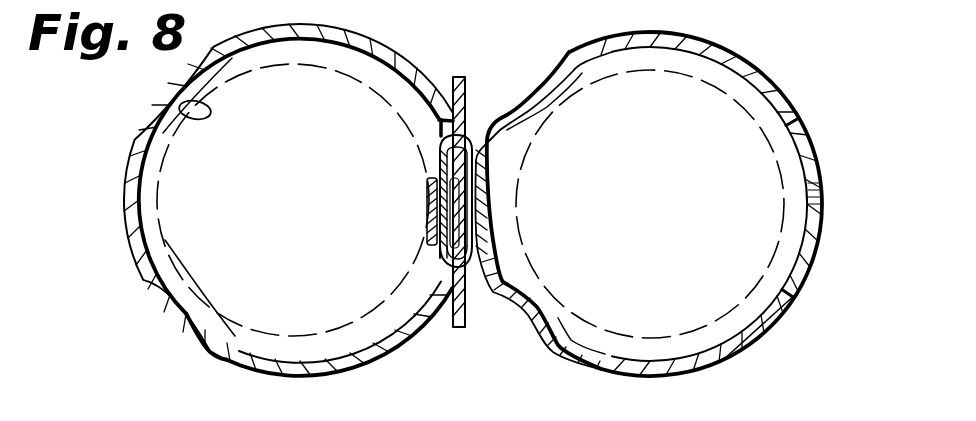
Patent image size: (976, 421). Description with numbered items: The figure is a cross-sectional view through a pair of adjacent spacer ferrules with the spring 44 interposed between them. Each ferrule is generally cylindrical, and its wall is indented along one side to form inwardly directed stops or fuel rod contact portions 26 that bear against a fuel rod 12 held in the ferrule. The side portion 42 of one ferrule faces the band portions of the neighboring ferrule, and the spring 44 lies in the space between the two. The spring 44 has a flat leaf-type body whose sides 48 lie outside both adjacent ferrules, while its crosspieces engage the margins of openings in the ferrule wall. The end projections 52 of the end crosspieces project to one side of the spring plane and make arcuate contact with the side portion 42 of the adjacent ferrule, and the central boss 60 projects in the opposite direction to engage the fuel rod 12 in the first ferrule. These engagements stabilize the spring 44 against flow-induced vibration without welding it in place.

The fuel rod 12 is at (198, 343).
The fuel rod contact portions 26 is at (179, 101).
The side portion 42 is at (122, 181).
The spring 44 is at (455, 330).
The sides 48 is at (450, 81).
The end projections 52 is at (474, 156).
The central boss 60 is at (427, 200).